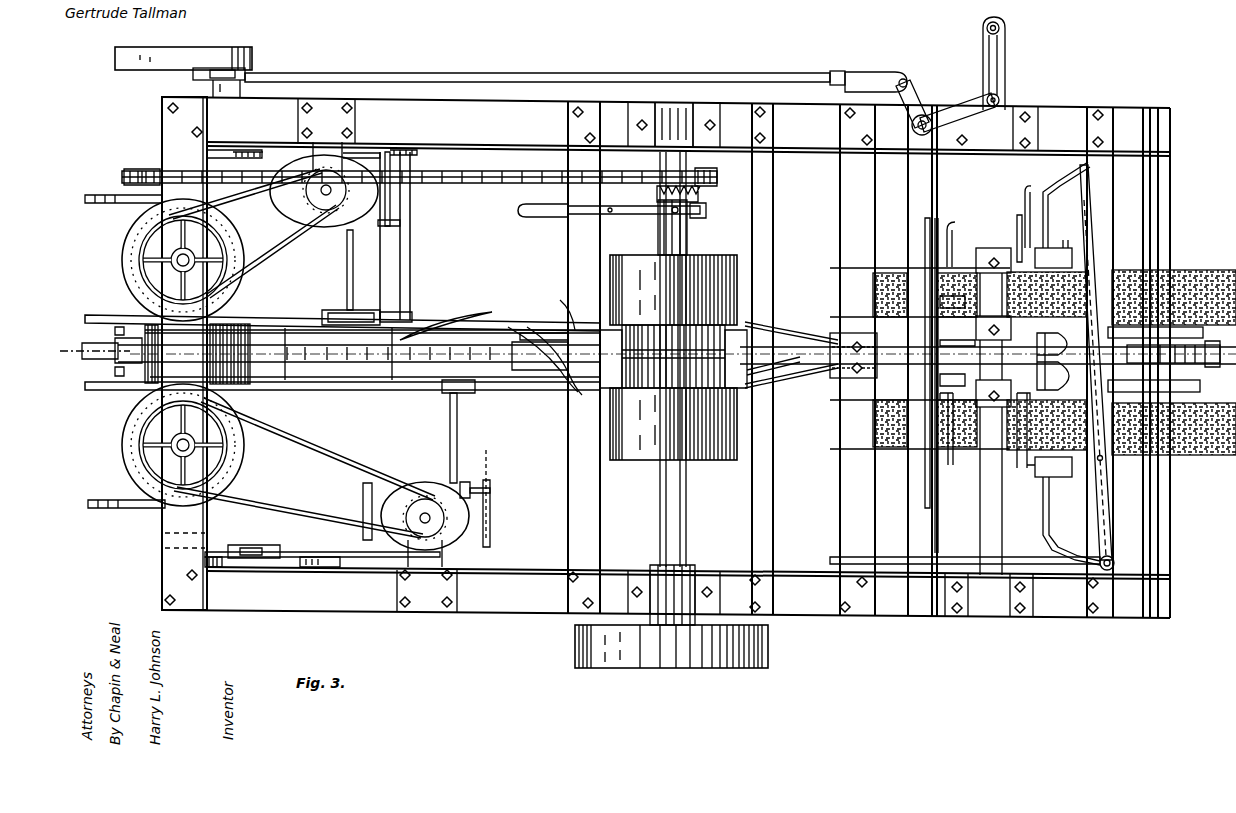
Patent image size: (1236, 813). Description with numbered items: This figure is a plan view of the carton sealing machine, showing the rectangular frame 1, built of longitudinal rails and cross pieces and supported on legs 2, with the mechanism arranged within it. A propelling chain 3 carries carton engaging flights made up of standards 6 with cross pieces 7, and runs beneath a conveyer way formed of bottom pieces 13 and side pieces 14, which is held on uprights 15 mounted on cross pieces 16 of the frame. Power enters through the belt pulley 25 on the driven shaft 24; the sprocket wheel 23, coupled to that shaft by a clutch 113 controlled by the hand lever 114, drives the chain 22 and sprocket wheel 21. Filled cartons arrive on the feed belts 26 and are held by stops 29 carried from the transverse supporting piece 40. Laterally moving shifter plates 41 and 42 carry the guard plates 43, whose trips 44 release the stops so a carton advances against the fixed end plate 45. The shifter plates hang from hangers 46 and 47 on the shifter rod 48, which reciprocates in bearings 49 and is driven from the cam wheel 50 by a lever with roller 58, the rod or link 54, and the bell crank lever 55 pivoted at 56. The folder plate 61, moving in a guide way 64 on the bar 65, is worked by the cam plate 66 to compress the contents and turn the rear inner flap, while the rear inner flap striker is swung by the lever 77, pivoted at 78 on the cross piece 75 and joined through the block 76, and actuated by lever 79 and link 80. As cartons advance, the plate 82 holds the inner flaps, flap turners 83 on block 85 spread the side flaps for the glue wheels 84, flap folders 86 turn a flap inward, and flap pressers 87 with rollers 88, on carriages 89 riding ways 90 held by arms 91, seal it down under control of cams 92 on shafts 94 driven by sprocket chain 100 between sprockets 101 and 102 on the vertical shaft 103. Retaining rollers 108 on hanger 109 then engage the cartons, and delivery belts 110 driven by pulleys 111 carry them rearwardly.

The frame 1 is at (548, 115).
The legs 2 is at (73, 360).
The propelling chain 3 is at (322, 372).
The standard 6 is at (527, 327).
The cross pieces 7 is at (508, 327).
The bottom pieces 13 is at (556, 334).
The side pieces 14 is at (560, 300).
The uprights 15 is at (412, 314).
The cross pieces 16 is at (410, 272).
The sprocket wheel 21 is at (122, 170).
The chain 22 is at (490, 171).
The sprocket wheel 23 is at (700, 169).
The driven shaft 24 is at (665, 523).
The belt pulley 25 is at (648, 665).
The feed belts 26 is at (1195, 268).
The stops 29 is at (1067, 250).
The supporting piece 40 is at (1042, 517).
The shifter plates 41 is at (1019, 235).
The shifter plate 42 is at (1028, 330).
The guard plates 43 is at (1045, 195).
The trip 44 is at (1026, 193).
The end plate 45 is at (954, 248).
The hangers 46 is at (993, 327).
The hangers 47 is at (993, 326).
The shifter rod 48 is at (983, 503).
The bearings 49 is at (1003, 118).
The cam wheel 50 is at (232, 46).
The rod or link 54 is at (404, 74).
The bell crank lever 55 is at (917, 82).
The pivot 56 is at (935, 118).
The roller 58 is at (1003, 58).
The folder plate 61 is at (991, 326).
The guide way 64 is at (940, 304).
The bar 65 is at (940, 342).
The cam plate 66 is at (928, 222).
The cross piece 75 is at (1100, 230).
The block 76 is at (1104, 355).
The lever 77 is at (1110, 518).
The pivot 78 is at (1103, 460).
The lever 79 is at (226, 568).
The link 80 is at (300, 568).
The plate 82 is at (785, 370).
The flap turners 83 is at (780, 322).
The glue wheels 84 is at (706, 270).
The block 85 is at (855, 335).
The flap folders 86 is at (470, 311).
The flap pressers 87 is at (347, 268).
The flap engaging roller 88 is at (340, 312).
The carriages 89 is at (470, 484).
The ways 90 is at (401, 223).
The arms 91 is at (391, 200).
The cams 92 is at (355, 168).
The shafts 94 is at (325, 188).
The sprocket chain 100 is at (310, 235).
The sprocket 101 is at (330, 200).
The sprocket 102 is at (140, 250).
The shaft 103 is at (170, 262).
The retaining rollers 108 is at (255, 318).
The hanger 109 is at (240, 394).
The belts 110 is at (95, 195).
The pulleys 111 is at (140, 232).
The clutch 113 is at (700, 195).
The hand lever 114 is at (542, 216).